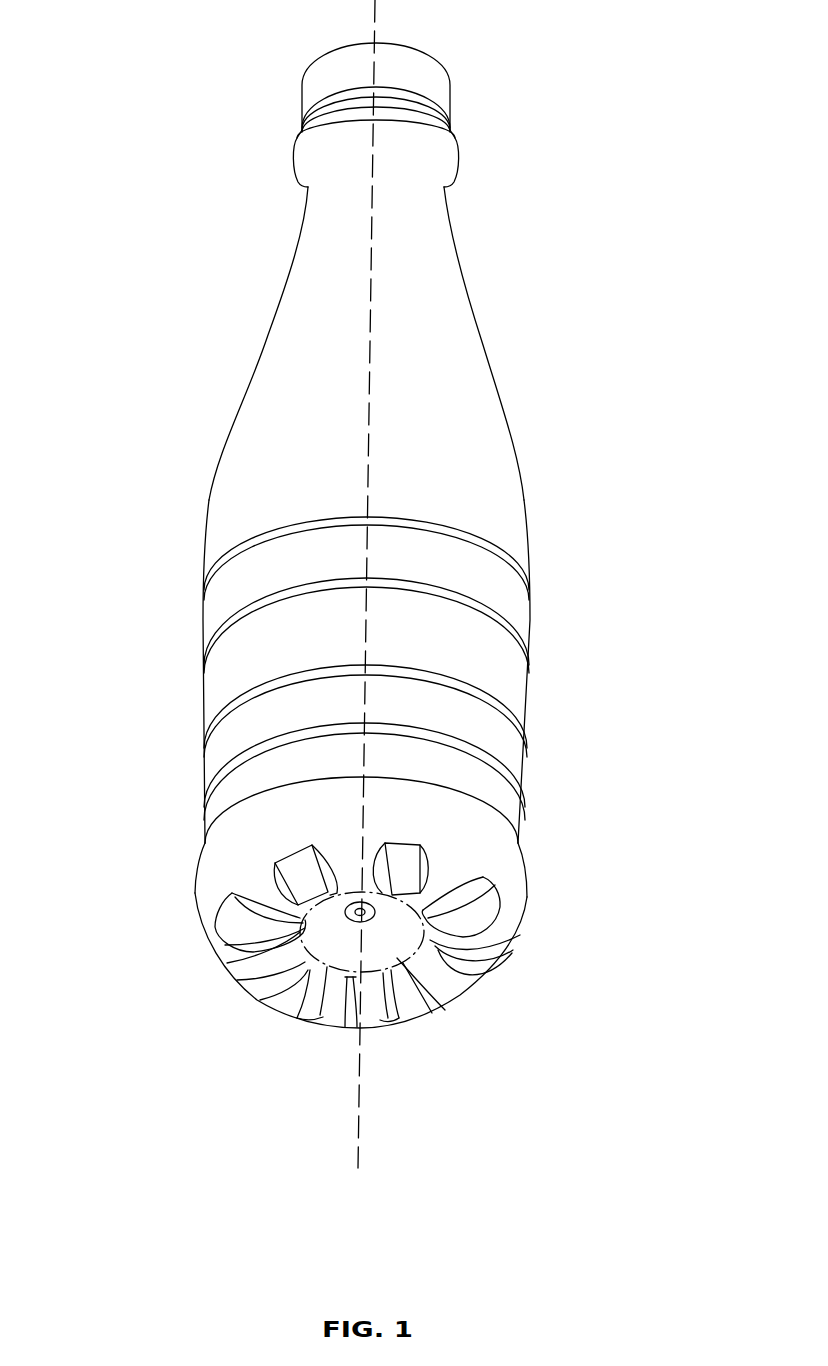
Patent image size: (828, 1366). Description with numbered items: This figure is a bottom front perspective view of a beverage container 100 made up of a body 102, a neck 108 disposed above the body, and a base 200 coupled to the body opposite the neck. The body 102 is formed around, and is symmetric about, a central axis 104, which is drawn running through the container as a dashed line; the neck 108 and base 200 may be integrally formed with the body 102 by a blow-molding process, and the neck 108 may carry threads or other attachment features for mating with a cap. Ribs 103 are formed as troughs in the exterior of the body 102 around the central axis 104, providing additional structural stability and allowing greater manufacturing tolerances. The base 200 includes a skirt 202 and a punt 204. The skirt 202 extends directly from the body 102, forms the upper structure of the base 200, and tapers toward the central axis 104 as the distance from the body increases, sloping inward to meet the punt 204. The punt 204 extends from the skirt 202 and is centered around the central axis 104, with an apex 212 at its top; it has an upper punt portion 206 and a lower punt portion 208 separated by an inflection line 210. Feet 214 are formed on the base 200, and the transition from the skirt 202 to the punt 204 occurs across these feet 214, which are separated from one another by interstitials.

The beverage container 100 is at (580, 163).
The body 102 is at (513, 718).
The ribs 103 is at (497, 630).
The central axis 104 is at (377, 20).
The neck 108 is at (470, 313).
The base 200 is at (513, 870).
The skirt 202 is at (505, 925).
The punt 204 is at (210, 957).
The upper punt portion 206 is at (393, 952).
The lower punt portion 208 is at (365, 993).
The inflection line 210 is at (290, 1000).
The apex 212 is at (345, 912).
The feet 214 is at (473, 978).